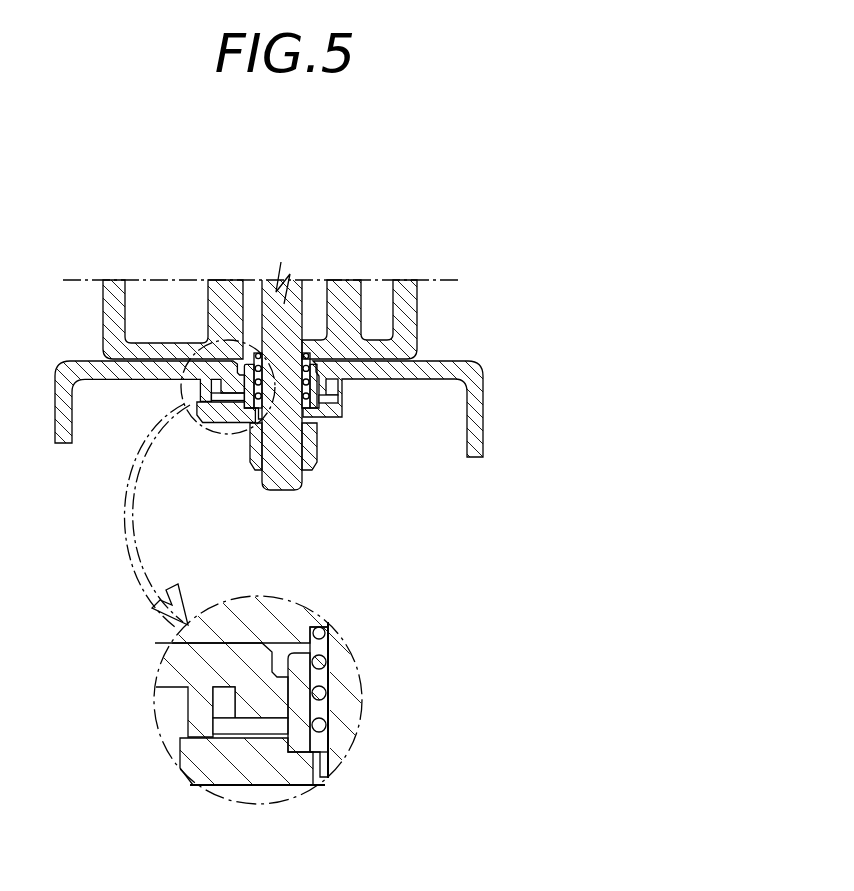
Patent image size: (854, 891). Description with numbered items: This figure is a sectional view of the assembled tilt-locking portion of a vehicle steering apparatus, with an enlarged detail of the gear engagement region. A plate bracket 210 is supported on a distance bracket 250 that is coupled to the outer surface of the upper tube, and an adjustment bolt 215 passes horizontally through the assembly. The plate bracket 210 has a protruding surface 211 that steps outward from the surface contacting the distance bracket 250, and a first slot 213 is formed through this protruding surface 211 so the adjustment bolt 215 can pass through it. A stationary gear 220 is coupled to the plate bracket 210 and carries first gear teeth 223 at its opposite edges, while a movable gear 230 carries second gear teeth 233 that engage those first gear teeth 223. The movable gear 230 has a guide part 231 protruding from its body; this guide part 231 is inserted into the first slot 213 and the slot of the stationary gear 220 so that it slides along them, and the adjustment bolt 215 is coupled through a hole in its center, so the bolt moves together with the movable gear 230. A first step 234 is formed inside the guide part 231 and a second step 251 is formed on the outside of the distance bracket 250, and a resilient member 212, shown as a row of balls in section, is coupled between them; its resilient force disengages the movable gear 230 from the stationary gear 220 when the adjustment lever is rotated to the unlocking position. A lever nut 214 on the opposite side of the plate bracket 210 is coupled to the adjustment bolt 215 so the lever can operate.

The plate bracket 210 is at (478, 437).
The protruding surface 211 is at (303, 778).
The resilient member 212 is at (327, 693).
The first slot 213 is at (357, 387).
The lever nut 214 is at (253, 465).
The adjustment bolt 215 is at (291, 282).
The stationary gear 220 is at (274, 708).
The first gear teeth 223 is at (182, 758).
The movable gear 230 is at (202, 786).
The guide part 231 is at (316, 392).
The second gear teeth 233 is at (224, 702).
The first step 234 is at (325, 738).
The distance bracket 250 is at (216, 290).
The second step 251 is at (340, 643).